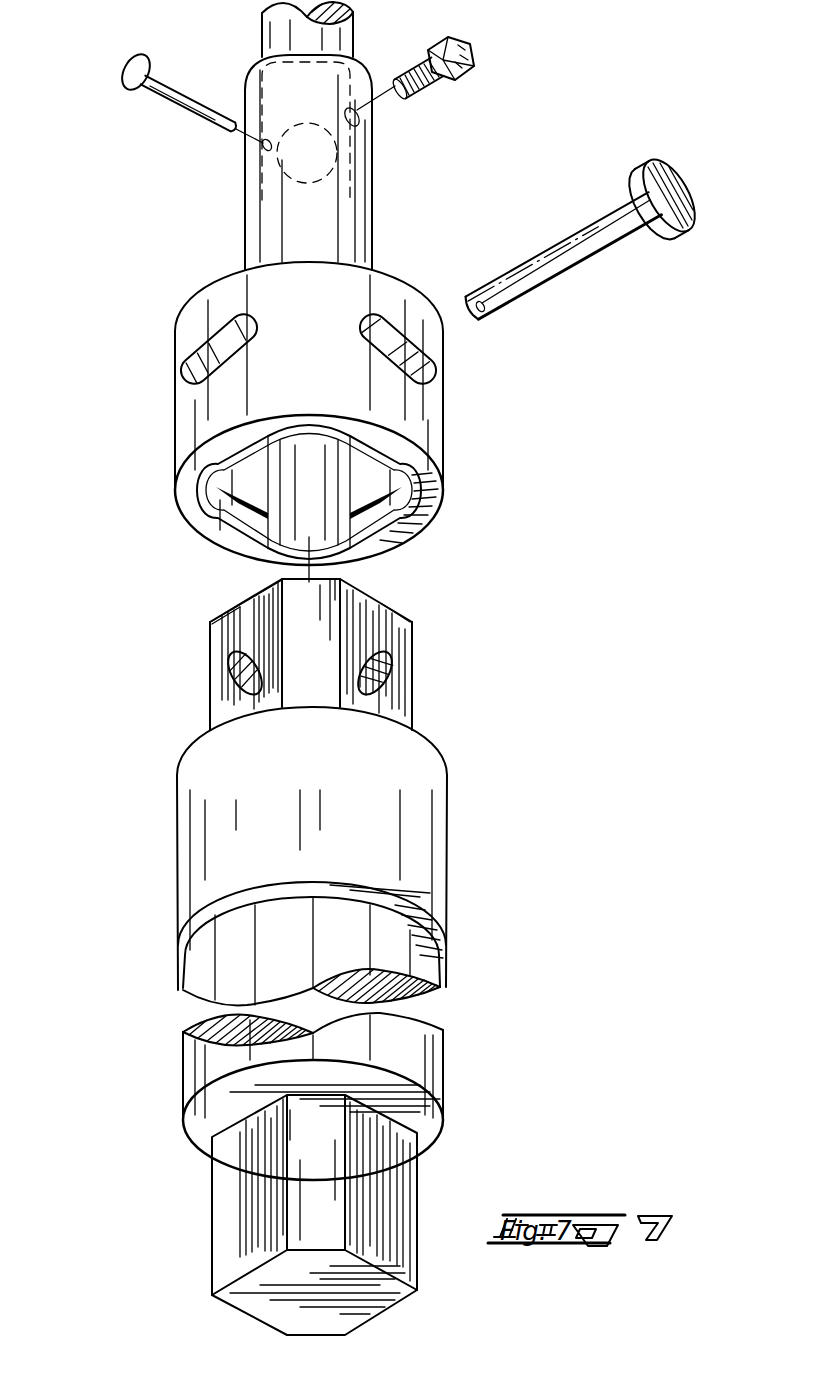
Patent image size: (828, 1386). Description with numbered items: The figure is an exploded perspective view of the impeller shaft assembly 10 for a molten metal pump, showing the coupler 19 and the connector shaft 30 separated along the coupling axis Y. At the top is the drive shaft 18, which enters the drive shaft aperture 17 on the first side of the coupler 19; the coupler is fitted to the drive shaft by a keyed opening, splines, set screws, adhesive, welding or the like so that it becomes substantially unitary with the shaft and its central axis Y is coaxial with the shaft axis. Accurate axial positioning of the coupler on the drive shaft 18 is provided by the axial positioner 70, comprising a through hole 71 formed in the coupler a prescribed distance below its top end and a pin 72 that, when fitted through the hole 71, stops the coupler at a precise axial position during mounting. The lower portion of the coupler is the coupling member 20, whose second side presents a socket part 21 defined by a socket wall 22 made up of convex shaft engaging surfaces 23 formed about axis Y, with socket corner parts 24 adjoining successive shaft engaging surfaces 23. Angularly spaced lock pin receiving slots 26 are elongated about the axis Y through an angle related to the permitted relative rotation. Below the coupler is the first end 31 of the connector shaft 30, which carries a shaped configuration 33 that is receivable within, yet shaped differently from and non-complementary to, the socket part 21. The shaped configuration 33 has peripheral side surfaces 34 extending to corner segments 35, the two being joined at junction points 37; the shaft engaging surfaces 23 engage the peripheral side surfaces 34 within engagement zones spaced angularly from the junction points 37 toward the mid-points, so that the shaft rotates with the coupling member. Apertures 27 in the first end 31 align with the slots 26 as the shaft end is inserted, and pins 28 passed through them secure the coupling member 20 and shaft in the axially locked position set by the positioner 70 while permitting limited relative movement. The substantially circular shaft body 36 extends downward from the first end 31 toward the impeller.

The impeller shaft assembly 10 is at (553, 330).
The drive shaft aperture 17 is at (338, 193).
The drive shaft 18 is at (282, 40).
The shaft coupler 19 is at (385, 255).
The coupling member 20 is at (443, 427).
The socket part 21 is at (437, 472).
The socket wall 22 is at (302, 502).
The shaft engaging surfaces 23 is at (370, 490).
The socket corner parts 24 is at (307, 433).
The lock pin receiving slots 26 is at (190, 366).
The apertures 27 is at (232, 671).
The pins 28 is at (570, 232).
The connector shaft 30 is at (458, 773).
The first end 31 is at (412, 657).
The shaped configuration 33 is at (407, 638).
The peripheral side surfaces 34 is at (222, 632).
The corner segments 35 is at (313, 688).
The shaft body 36 is at (418, 968).
The junction points 37 is at (333, 618).
The axial positioner 70 is at (201, 156).
The through hole 71 is at (265, 150).
The pin 72 is at (170, 105).
The coupling axis Y is at (347, 543).